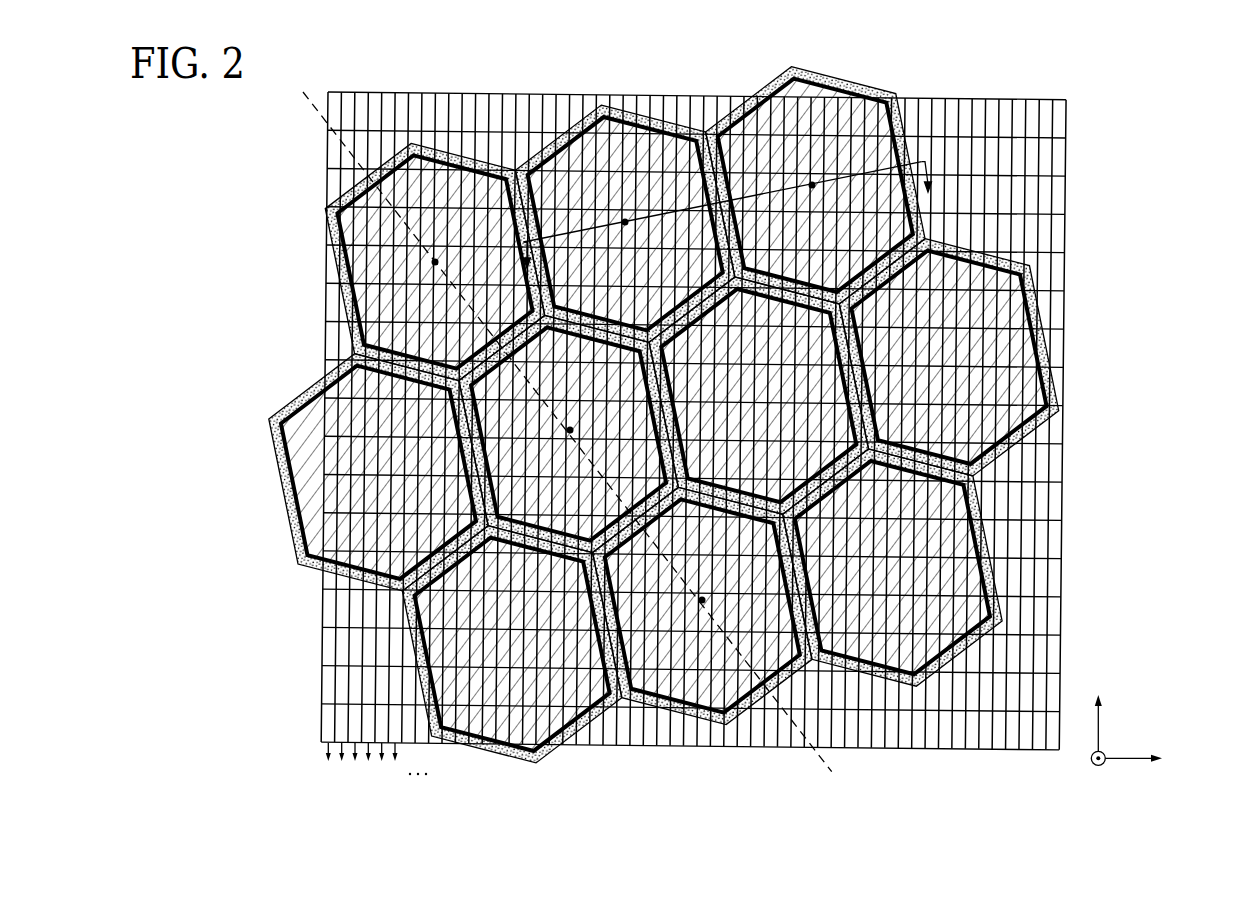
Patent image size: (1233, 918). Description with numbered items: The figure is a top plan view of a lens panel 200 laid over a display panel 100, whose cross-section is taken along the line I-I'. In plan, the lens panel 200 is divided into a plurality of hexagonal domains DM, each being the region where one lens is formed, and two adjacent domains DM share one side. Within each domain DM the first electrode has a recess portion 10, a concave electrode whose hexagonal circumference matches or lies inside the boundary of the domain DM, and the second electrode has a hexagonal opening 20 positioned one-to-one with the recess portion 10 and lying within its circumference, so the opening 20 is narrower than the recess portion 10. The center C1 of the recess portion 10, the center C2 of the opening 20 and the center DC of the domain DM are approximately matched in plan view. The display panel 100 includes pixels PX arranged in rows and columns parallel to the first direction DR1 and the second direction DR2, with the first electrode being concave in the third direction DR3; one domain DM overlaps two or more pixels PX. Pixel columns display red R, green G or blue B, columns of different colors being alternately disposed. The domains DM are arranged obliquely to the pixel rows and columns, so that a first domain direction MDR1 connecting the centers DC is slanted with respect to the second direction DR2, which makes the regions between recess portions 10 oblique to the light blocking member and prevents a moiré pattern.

The display panel 100 is at (1030, 99).
The lens panel 200 is at (666, 421).
The recess portion 10 is at (282, 468).
The opening 20 is at (1043, 339).
The domain DM is at (578, 124).
The pixel PX is at (989, 99).
The center of the domain DC is at (648, 375).
The center of the recess portion C1 is at (625, 222).
The center of the opening C2 is at (812, 185).
The first domain direction MDR1 is at (581, 444).
The line I-I' I is at (733, 224).
The red R is at (349, 765).
The green G is at (363, 765).
The blue B is at (376, 765).
The first direction DR1 is at (1156, 760).
The second direction DR2 is at (1099, 710).
The third direction DR3 is at (1086, 774).